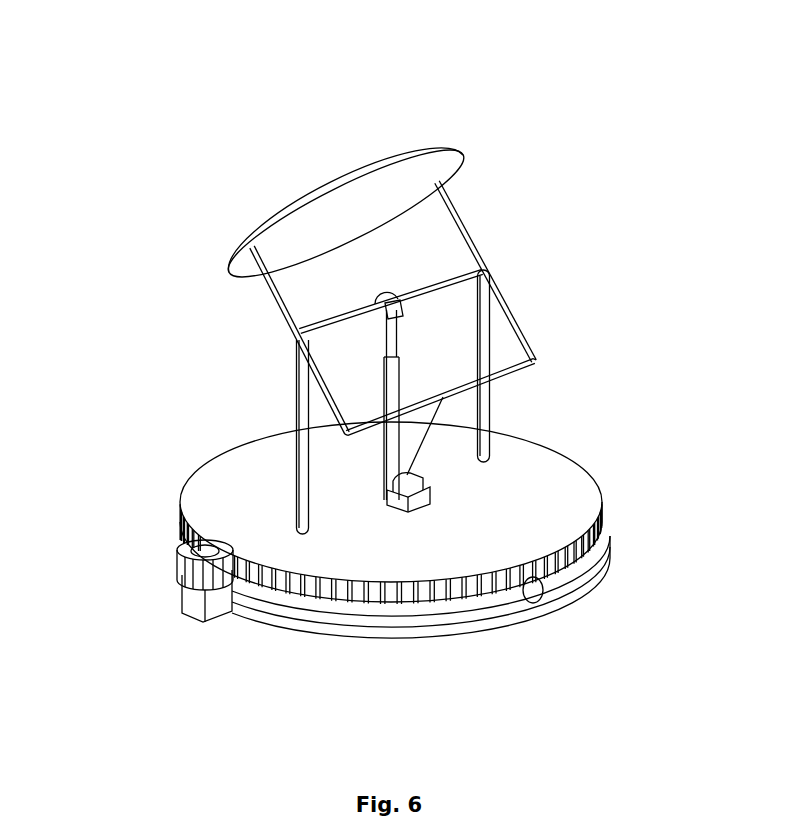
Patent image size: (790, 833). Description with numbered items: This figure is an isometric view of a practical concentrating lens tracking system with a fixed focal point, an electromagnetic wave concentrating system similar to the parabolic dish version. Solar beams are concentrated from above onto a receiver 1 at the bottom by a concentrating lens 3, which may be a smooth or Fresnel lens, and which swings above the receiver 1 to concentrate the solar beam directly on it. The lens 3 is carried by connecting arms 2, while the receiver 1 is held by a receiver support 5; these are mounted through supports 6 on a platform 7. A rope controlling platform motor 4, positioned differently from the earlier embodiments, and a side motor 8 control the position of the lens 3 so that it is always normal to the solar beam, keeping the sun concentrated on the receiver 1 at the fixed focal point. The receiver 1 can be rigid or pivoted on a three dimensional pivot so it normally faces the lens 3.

The receiver 1 is at (390, 302).
The connecting arms 2 is at (522, 345).
The concentrating lens 3 is at (443, 162).
The rope controlling platform motor 4 is at (420, 500).
The receiver support 5 is at (392, 375).
The supports 6 is at (303, 513).
The platform 7 is at (562, 518).
The side motor 8 is at (197, 598).